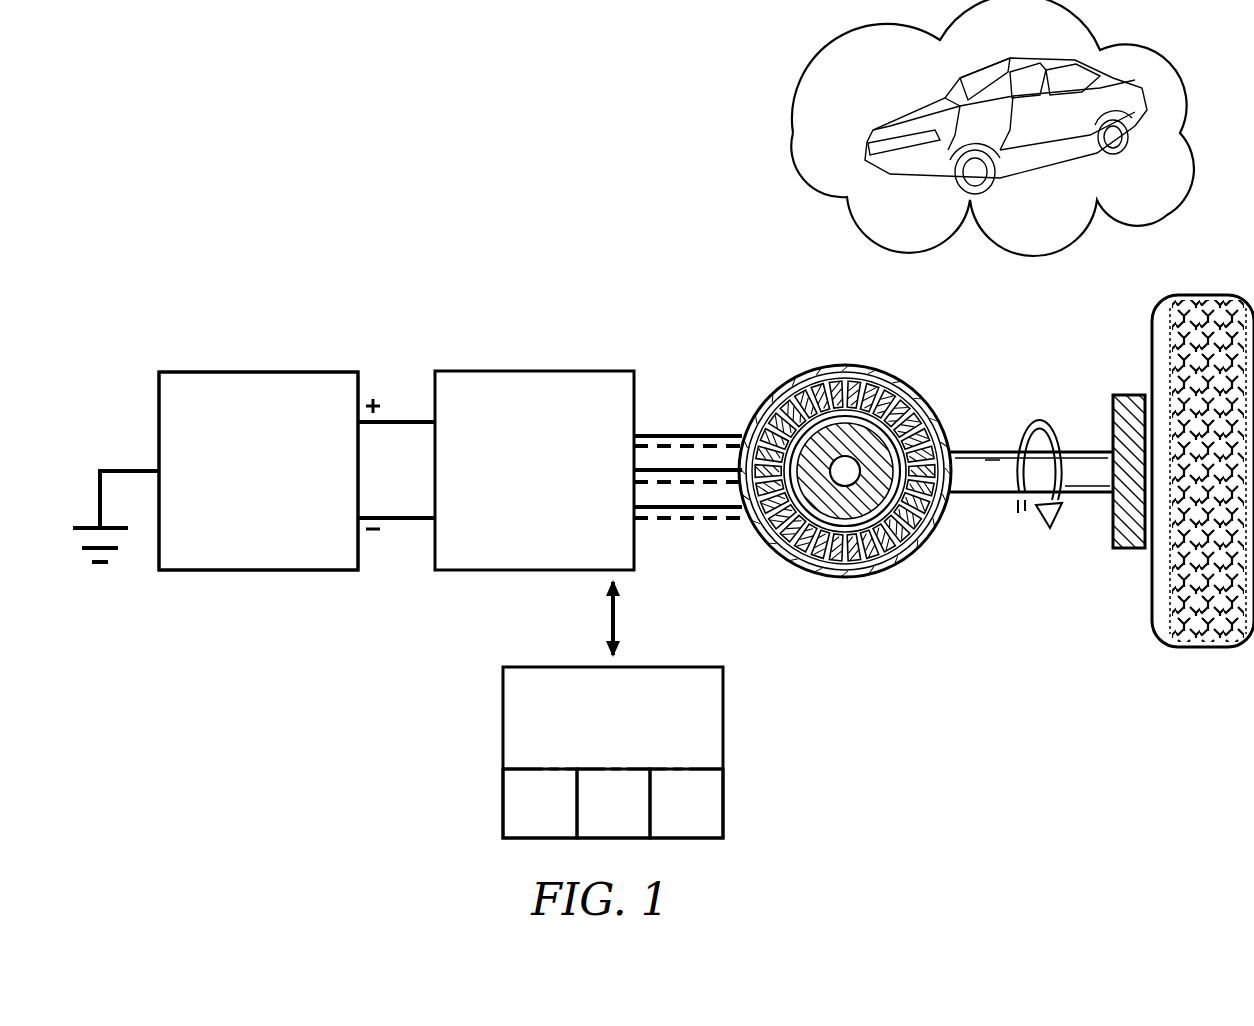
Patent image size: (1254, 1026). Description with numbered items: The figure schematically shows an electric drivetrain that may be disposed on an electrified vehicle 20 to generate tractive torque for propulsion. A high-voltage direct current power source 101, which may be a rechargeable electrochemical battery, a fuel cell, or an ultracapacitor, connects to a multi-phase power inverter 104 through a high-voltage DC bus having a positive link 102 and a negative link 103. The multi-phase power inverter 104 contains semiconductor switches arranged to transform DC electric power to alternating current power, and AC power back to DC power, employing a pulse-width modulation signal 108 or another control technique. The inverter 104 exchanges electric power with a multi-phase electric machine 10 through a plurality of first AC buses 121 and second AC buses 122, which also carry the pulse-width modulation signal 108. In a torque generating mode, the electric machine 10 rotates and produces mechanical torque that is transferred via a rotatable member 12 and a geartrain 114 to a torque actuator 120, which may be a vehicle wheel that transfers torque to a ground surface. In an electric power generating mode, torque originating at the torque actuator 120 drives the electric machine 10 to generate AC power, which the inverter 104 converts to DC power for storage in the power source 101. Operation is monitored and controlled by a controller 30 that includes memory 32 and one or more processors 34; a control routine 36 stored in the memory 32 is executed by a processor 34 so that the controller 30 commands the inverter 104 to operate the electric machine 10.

The direct current (DC) power source 101 is at (236, 487).
The positive link 102 is at (397, 420).
The negative link 103 is at (397, 519).
The multi-phase power inverter 104 is at (512, 487).
The first AC buses 121 is at (653, 495).
The second AC buses 122 is at (715, 458).
The pulse-width modulation signal 108 is at (621, 636).
The controller 30 is at (598, 738).
The memory 32 is at (525, 822).
The processors 34 is at (598, 822).
The control routine 36 is at (672, 822).
The electric machine 10 is at (846, 362).
The rotatable member 12 is at (1071, 450).
The geartrain 114 is at (1130, 549).
The torque actuator 120 is at (1200, 648).
The electrified vehicle 20 is at (880, 84).